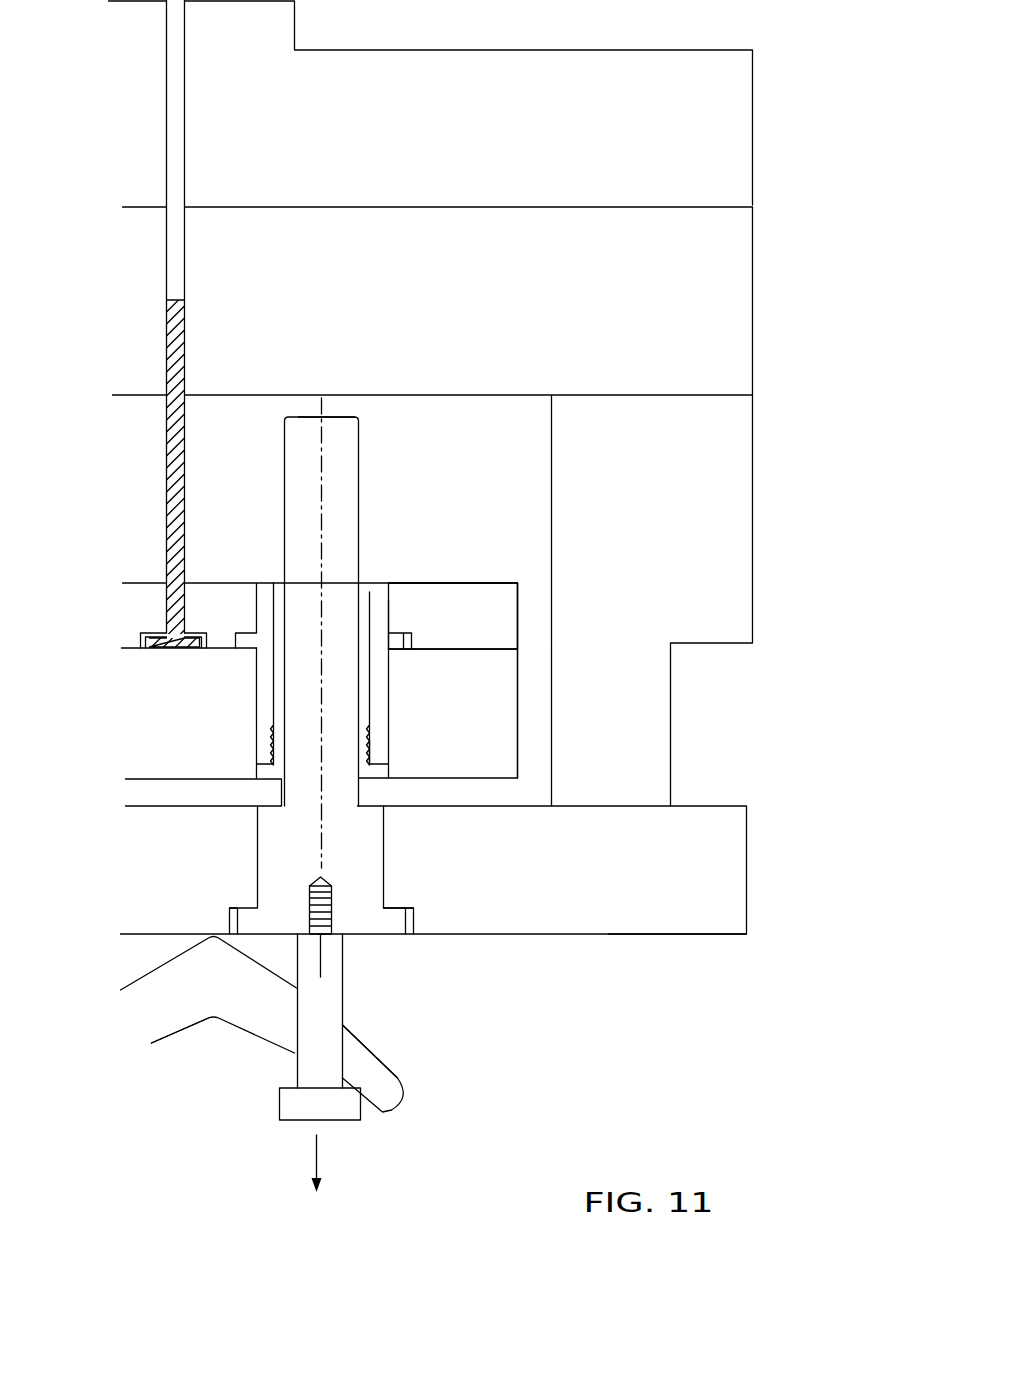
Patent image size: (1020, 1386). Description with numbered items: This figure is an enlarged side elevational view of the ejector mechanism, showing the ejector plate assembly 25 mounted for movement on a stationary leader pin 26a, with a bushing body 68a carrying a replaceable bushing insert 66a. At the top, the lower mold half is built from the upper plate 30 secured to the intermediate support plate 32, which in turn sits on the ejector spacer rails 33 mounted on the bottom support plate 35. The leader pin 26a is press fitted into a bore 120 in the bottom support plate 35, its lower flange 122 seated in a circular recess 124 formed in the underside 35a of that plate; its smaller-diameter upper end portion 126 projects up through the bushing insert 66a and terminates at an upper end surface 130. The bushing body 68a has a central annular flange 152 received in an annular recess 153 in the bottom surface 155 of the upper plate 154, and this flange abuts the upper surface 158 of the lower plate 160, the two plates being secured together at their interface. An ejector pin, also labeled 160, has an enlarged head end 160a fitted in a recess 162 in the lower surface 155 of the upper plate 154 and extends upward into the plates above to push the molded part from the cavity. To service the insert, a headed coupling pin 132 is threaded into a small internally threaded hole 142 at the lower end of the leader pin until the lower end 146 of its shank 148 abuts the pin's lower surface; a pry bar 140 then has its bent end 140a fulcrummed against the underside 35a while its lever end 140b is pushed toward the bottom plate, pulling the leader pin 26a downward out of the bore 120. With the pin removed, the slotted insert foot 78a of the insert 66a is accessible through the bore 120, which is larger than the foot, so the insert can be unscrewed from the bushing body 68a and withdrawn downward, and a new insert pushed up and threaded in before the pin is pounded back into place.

The upper plate 30 is at (725, 143).
The intermediate support plate 32 is at (735, 255).
The ejector spacer rails 33 is at (730, 450).
The bottom support plate 35 is at (717, 883).
The underside of bottom support plate 35a is at (675, 937).
The lower plate / ejector pin 160 is at (170, 495).
The enlarged head end 160a is at (146, 648).
The recess 162 is at (141, 637).
The annular recess 153 is at (244, 630).
The central annular flange 152 is at (239, 648).
The upper end portion 126 is at (284, 487).
The upper end surface 130 is at (334, 408).
The leader pin 26a is at (340, 427).
The upper plate 154 is at (485, 592).
The bushing insert 66a is at (355, 618).
The upper surface 158 is at (494, 648).
The bottom surface 155 is at (477, 652).
The ejector plate assembly 25 is at (528, 605).
The bushing body 68a is at (369, 613).
The insert foot 78a is at (374, 770).
The bore 120 is at (249, 843).
The internally threaded hole 142 is at (300, 910).
The lower end of shank 146 is at (298, 912).
The circular recess 124 is at (379, 836).
The lower flange 122 is at (382, 917).
The shank 148 is at (327, 968).
The headed coupling pin 132 is at (336, 1117).
The pry bar 140 is at (365, 770).
The bent end 140a is at (379, 1072).
The lever end 140b is at (135, 1050).